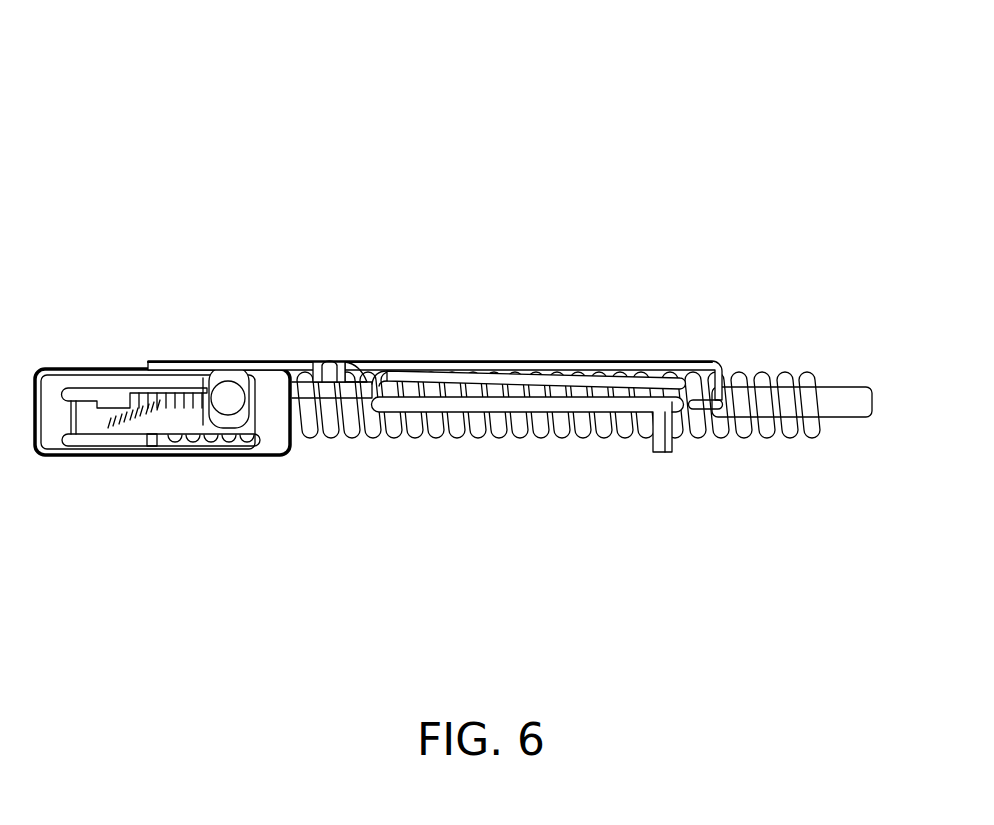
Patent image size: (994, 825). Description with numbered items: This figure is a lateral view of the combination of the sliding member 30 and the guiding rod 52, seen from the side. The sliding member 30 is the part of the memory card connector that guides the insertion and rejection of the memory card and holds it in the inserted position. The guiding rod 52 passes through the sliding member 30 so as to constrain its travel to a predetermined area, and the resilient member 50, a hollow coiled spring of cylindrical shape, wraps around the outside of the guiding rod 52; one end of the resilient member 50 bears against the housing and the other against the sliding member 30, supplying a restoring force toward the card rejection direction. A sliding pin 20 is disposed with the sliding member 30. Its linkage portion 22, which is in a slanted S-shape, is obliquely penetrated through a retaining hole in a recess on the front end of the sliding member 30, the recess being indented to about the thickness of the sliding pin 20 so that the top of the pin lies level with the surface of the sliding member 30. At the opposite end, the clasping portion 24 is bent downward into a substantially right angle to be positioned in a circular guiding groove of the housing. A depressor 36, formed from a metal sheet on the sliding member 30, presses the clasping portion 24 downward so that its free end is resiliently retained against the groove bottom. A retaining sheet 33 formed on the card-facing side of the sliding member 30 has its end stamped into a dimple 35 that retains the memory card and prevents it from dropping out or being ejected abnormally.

The sliding pin 20 is at (492, 405).
The linkage portion 22 is at (328, 362).
The clasping portion 24 is at (672, 450).
The sliding member 30 is at (705, 362).
The retaining sheet 33 is at (118, 422).
The dimple 35 is at (229, 402).
The depressor 36 is at (560, 383).
The resilient member 50 is at (347, 416).
The guiding rod 52 is at (843, 395).